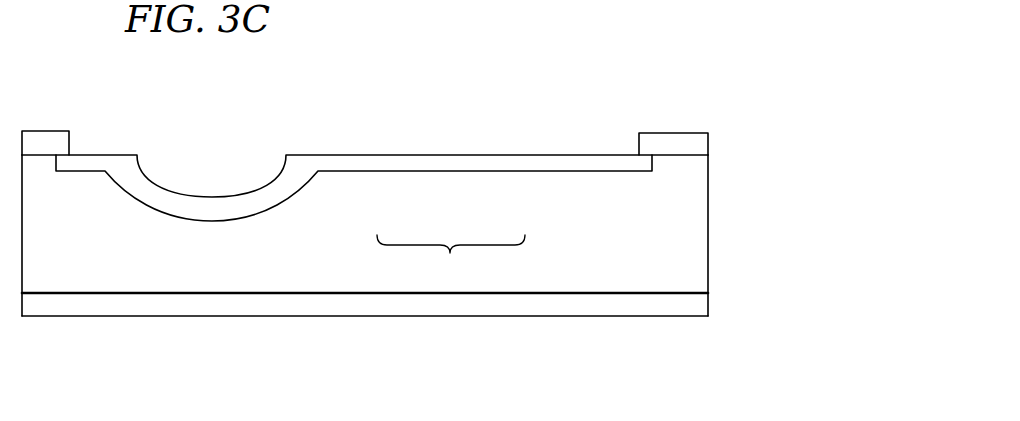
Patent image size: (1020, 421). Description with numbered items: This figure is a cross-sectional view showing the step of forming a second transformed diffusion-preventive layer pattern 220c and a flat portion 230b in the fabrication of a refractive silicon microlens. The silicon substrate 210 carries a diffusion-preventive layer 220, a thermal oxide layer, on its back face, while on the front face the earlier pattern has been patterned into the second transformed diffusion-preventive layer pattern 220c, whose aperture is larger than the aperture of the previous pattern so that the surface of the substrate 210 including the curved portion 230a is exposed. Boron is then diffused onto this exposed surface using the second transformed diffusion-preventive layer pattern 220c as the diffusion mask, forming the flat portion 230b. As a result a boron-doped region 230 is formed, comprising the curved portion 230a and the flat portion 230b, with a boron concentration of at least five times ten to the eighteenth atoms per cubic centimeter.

The silicon substrate 210 is at (708, 229).
The diffusion-preventive layer 220 is at (708, 303).
The second transformed diffusion-preventive layer pattern 220c is at (708, 153).
The boron-doped region 230 is at (451, 262).
The curved portion 230a is at (298, 183).
The flat portion 230b is at (412, 168).